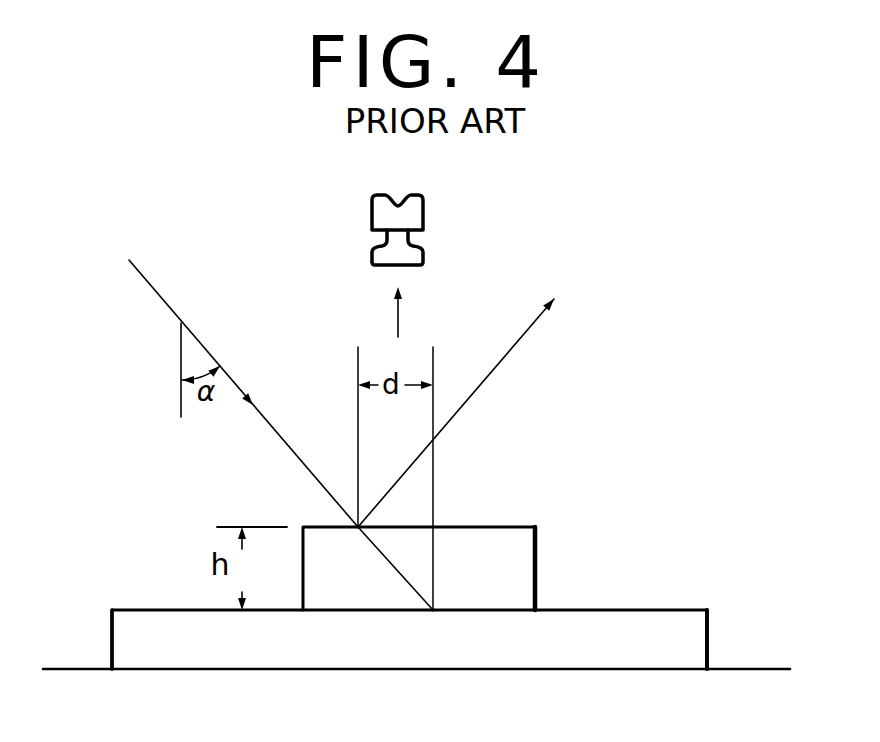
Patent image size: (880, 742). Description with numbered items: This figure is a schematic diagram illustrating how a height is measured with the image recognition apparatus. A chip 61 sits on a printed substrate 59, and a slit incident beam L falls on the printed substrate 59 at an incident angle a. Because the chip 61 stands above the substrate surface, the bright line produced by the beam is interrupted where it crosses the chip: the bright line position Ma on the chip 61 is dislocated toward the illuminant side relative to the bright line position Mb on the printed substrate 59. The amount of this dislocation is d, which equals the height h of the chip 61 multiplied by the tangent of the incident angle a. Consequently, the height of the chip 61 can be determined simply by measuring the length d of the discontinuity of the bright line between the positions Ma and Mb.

The printed substrate 59 is at (670, 610).
The chip 61 is at (535, 542).
The slit incident beam L is at (163, 302).
The bright line position on the chip Ma is at (358, 527).
The bright line position on the printed substrate Mb is at (433, 610).